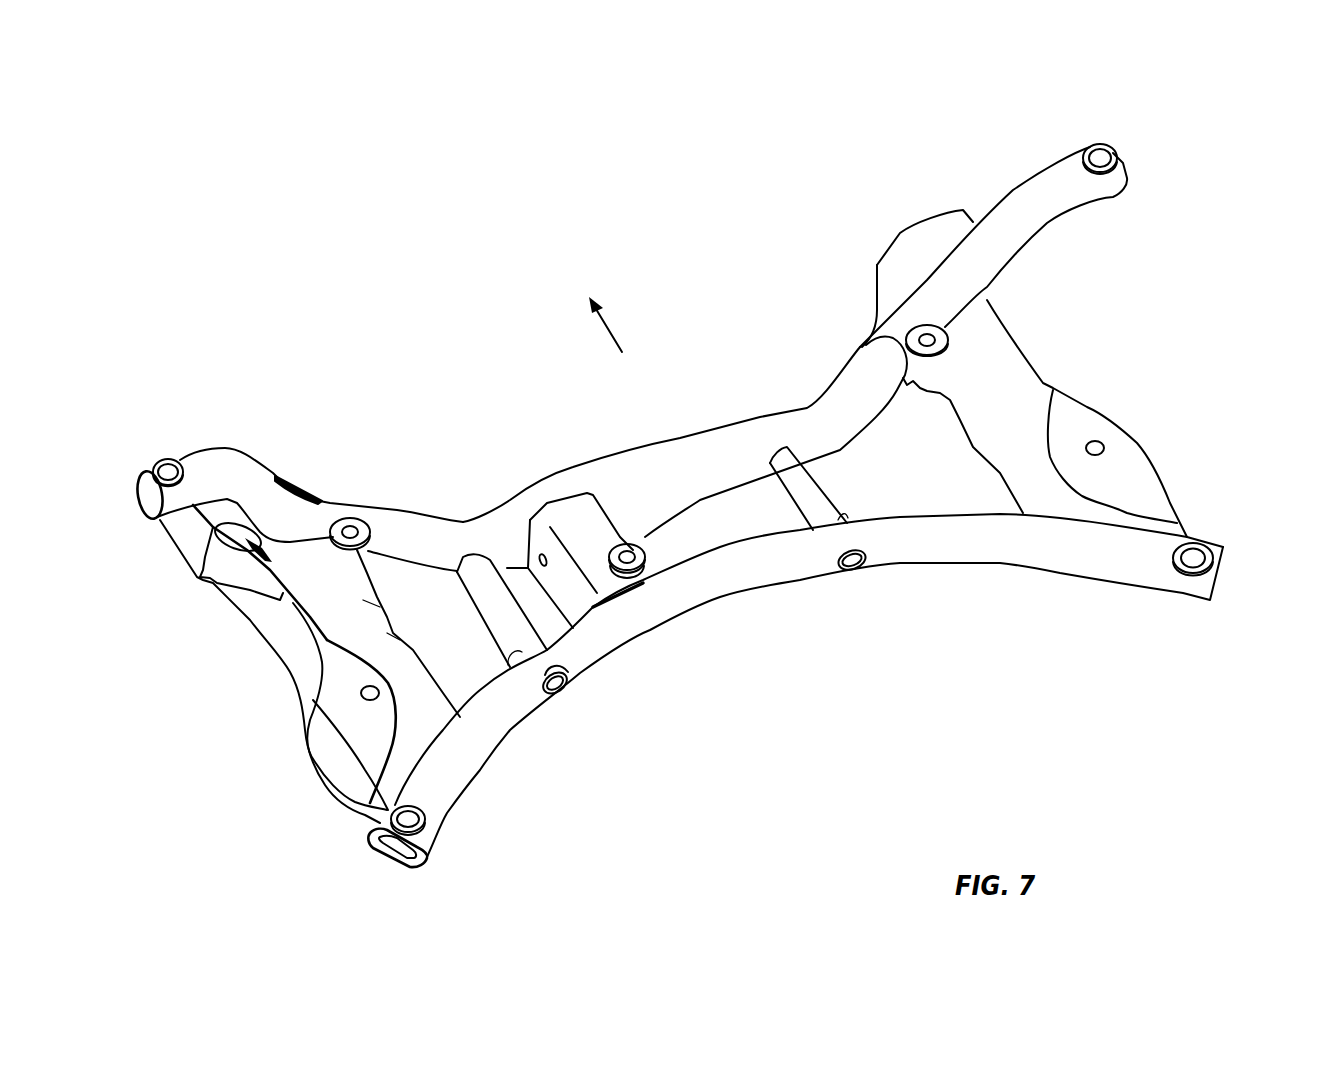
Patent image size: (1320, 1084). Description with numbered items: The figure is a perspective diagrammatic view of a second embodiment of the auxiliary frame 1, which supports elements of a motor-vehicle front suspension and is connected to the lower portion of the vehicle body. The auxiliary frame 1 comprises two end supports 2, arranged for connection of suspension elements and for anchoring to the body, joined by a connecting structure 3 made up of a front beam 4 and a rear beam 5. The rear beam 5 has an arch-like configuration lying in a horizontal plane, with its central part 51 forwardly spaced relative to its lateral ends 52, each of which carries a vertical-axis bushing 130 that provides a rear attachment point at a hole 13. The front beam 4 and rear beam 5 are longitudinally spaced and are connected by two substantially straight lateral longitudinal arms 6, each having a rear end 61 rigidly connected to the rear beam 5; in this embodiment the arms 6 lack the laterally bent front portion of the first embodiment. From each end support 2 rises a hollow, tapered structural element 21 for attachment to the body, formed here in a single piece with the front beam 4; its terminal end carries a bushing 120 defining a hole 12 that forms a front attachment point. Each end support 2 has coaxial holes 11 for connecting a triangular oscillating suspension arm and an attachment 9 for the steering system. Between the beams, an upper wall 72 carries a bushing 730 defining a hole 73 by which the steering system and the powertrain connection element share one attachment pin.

The auxiliary frame 1 is at (820, 707).
The end support 2 is at (255, 649).
The connecting structure 3 is at (712, 635).
The front beam 4 is at (689, 438).
The rear beam 5 is at (786, 584).
The lateral longitudinal arm 6 is at (478, 588).
The attachment 9 is at (350, 528).
The hole 11 is at (360, 686).
The hole 12 is at (165, 462).
The hole 13 is at (403, 822).
The structural element 21 is at (238, 470).
The central part 51 is at (727, 580).
The lateral end 52 is at (1115, 552).
The rear end 61 is at (830, 520).
The upper wall 72 is at (580, 512).
The hole 73 is at (647, 547).
The bushing 120 is at (180, 462).
The bushing 130 is at (432, 831).
The bushing 730 is at (620, 550).